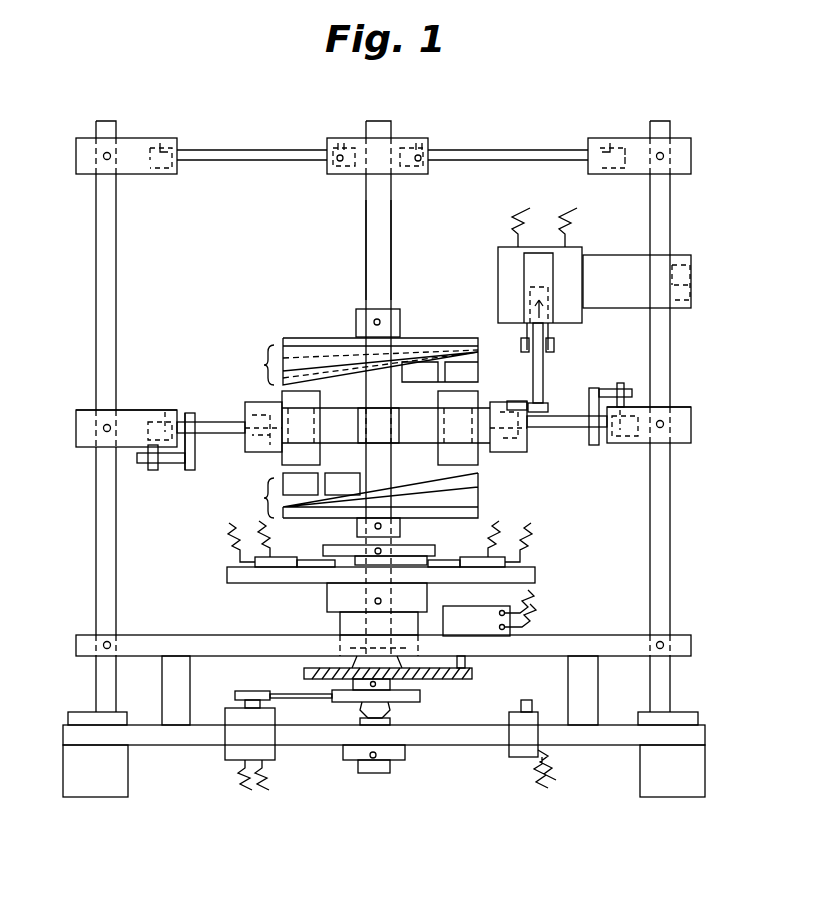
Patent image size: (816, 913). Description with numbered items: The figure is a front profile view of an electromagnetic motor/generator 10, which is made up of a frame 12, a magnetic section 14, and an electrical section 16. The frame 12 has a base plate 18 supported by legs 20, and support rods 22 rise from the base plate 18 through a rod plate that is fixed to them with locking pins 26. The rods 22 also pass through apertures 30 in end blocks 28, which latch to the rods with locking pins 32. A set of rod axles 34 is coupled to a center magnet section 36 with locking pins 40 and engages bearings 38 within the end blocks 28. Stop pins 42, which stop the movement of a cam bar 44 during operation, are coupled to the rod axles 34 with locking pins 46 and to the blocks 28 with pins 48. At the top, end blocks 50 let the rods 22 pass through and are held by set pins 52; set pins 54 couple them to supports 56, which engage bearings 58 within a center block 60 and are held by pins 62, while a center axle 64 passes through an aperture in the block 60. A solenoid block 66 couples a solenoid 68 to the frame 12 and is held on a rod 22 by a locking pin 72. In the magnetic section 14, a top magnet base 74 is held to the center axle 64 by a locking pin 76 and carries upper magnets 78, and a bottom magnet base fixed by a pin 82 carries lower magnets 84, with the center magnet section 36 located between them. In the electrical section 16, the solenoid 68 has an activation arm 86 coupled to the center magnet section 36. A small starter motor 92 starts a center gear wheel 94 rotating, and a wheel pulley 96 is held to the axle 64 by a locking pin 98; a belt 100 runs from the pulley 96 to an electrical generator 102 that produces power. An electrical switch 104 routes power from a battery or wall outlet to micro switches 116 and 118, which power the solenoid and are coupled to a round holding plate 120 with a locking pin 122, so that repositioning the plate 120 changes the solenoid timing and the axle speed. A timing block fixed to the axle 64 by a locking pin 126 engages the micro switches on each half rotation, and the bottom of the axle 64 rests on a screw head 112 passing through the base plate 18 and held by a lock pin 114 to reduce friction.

The electromagnetic motor/generator 10 is at (594, 88).
The frame 12 is at (75, 318).
The magnetic section 14 is at (258, 304).
The electrical section 16 is at (490, 228).
The base plate 18 is at (705, 735).
The legs 20 is at (384, 771).
The support rods 22 is at (96, 522).
The locking pins 26 is at (104, 644).
The end blocks 28 is at (128, 410).
The apertures 30 is at (76, 428).
The locking pins 32 is at (105, 432).
The rod axles 34 is at (205, 436).
The center magnet section 36 is at (268, 452).
The bearings 38 is at (178, 412).
The locking pins 40 is at (258, 402).
The stop pins 42 is at (165, 465).
The cam bar 44 is at (192, 468).
The locking pins 46 is at (192, 418).
The pins 48 is at (152, 472).
The end blocks 50 is at (76, 165).
The set pins 52 is at (105, 153).
The set pins 54 is at (162, 146).
The supports 56 is at (242, 160).
The bearings 58 is at (366, 128).
The center block 60 is at (350, 175).
The pins 62 is at (352, 140).
The center axle 64 is at (368, 240).
The solenoid block 66 is at (637, 281).
The solenoid 68 is at (498, 270).
The locking pin 72 is at (686, 300).
The top magnet base 74 is at (300, 338).
The locking pin 76 is at (382, 322).
The upper magnets 78 is at (257, 365).
The pin 82 is at (382, 526).
The lower magnets 84 is at (359, 495).
The activation arm 86 is at (548, 356).
The starter motor 92 is at (480, 620).
The center gear wheel 94 is at (304, 672).
The wheel pulley 96 is at (378, 686).
The locking pin 98 is at (390, 705).
The belt 100 is at (300, 700).
The electrical generator 102 is at (222, 716).
The electrical switch 104 is at (516, 760).
The screw head 112 is at (360, 775).
The lock pin 114 is at (373, 760).
The micro switch 116 is at (280, 566).
The micro switch 118 is at (470, 566).
The holding plate 120 is at (535, 575).
The locking pin 122 is at (375, 601).
The locking pin 126 is at (375, 551).